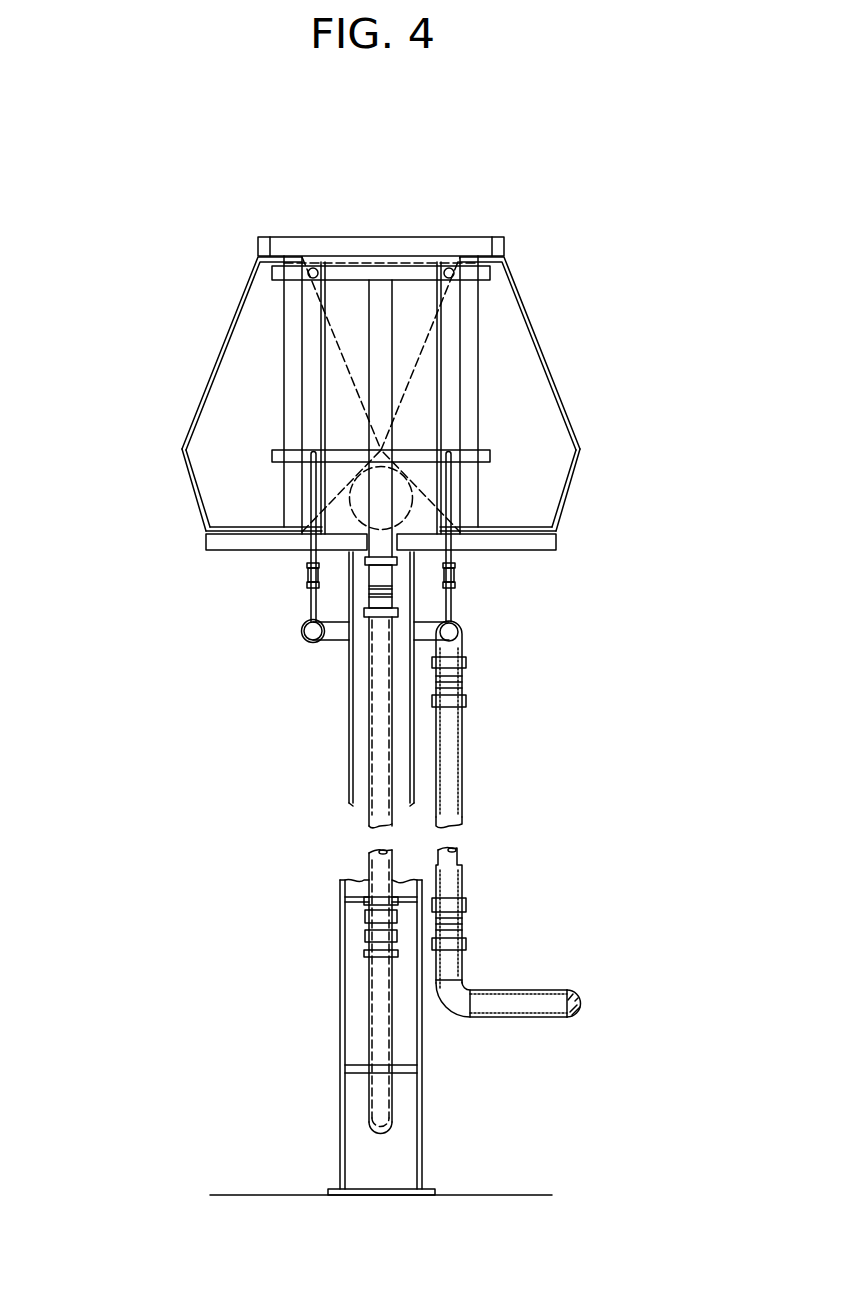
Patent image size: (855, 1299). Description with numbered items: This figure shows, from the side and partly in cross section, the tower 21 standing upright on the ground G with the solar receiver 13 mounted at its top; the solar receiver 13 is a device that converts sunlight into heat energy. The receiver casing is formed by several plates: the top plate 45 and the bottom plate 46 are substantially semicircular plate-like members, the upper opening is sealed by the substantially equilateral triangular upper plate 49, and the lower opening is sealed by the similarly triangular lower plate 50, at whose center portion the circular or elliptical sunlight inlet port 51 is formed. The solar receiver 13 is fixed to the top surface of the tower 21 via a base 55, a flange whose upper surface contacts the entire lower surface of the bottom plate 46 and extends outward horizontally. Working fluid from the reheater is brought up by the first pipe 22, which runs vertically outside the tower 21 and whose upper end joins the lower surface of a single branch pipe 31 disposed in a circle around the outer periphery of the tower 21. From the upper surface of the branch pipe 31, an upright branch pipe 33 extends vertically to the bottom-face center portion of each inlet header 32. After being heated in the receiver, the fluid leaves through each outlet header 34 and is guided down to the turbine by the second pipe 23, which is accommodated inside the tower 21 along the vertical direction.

The solar receiver 13 is at (371, 370).
The top plate 45 is at (269, 255).
The outlet header 34 is at (490, 290).
The upper plate 49 is at (223, 338).
The lower plate 50 is at (182, 452).
The sunlight inlet port 51 is at (203, 520).
The inlet header 32 is at (470, 446).
The bottom plate 46 is at (225, 552).
The base 55 is at (545, 551).
The branch pipe 33 is at (307, 610).
The branch pipe 31 is at (333, 642).
The second pipe 23 is at (372, 853).
The first pipe 22 is at (458, 822).
The tower 21 is at (338, 943).
The ground G is at (248, 1195).